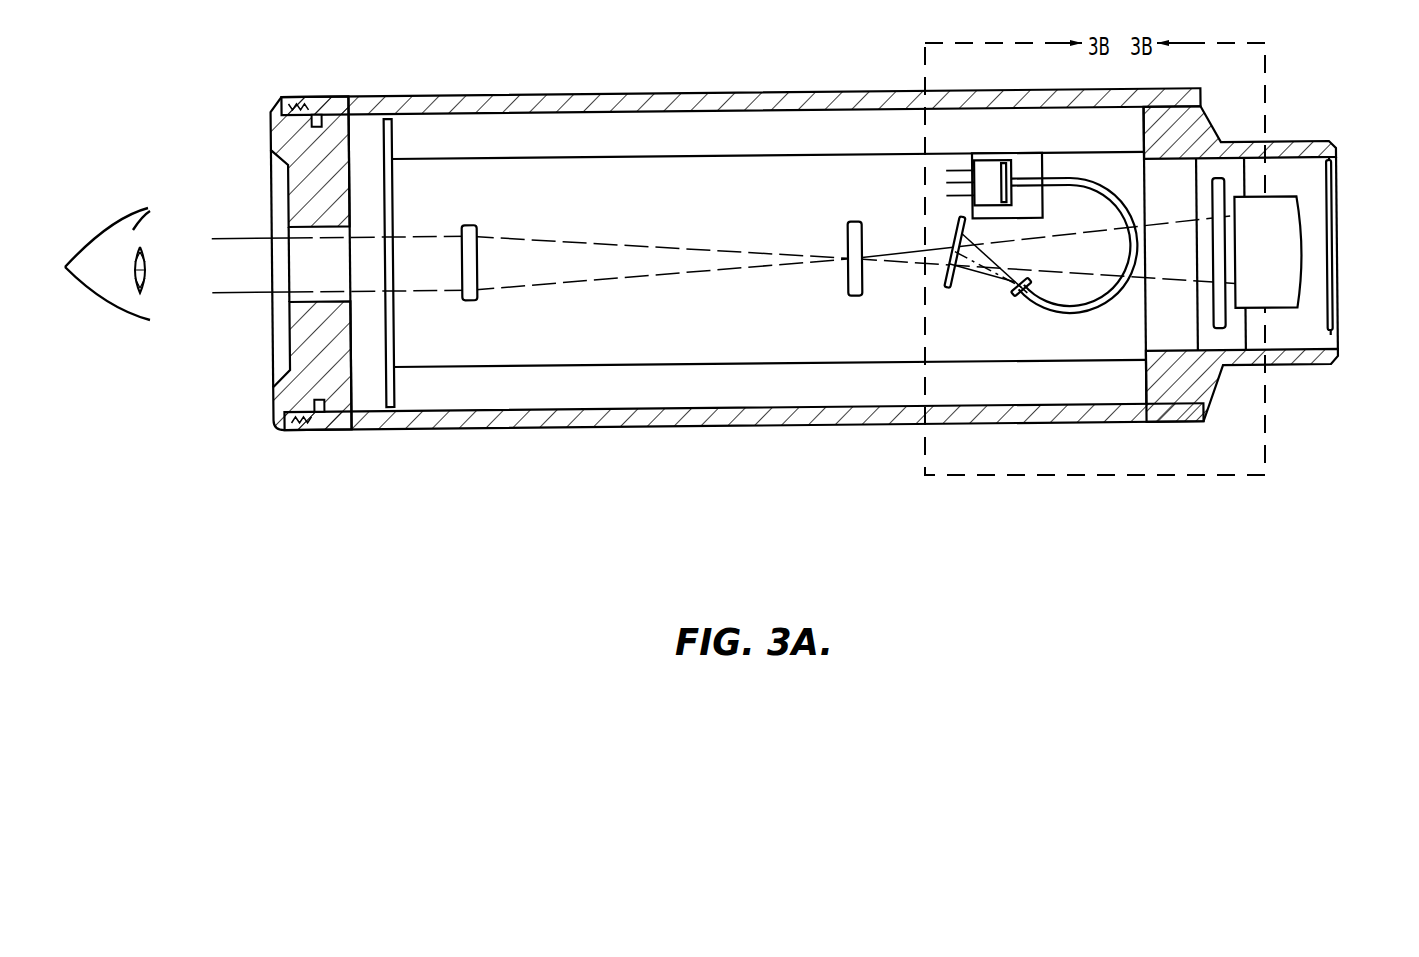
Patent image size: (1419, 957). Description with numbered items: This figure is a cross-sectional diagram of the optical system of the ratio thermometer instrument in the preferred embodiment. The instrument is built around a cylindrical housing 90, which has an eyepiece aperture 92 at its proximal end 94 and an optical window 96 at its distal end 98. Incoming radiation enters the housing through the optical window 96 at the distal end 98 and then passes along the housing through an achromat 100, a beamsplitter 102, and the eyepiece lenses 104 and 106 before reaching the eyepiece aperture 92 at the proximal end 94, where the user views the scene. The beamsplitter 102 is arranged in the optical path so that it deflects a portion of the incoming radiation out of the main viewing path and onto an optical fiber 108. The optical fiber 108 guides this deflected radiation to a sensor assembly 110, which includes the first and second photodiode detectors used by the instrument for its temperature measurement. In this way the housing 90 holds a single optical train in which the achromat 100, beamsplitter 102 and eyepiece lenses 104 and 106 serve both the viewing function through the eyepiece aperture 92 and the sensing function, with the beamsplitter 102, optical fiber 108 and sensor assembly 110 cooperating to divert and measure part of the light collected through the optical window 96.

The cylindrical housing 90 is at (747, 53).
The eyepiece aperture 92 is at (305, 265).
The proximal end 94 is at (318, 90).
The optical window 96 is at (1218, 178).
The distal end 98 is at (1366, 373).
The achromat 100 is at (1275, 293).
The beamsplitter 102 is at (946, 289).
The eyepiece lens 104 is at (847, 287).
The eyepiece lens 106 is at (470, 300).
The optical fiber 108 is at (1060, 312).
The sensor assembly 110 is at (988, 166).